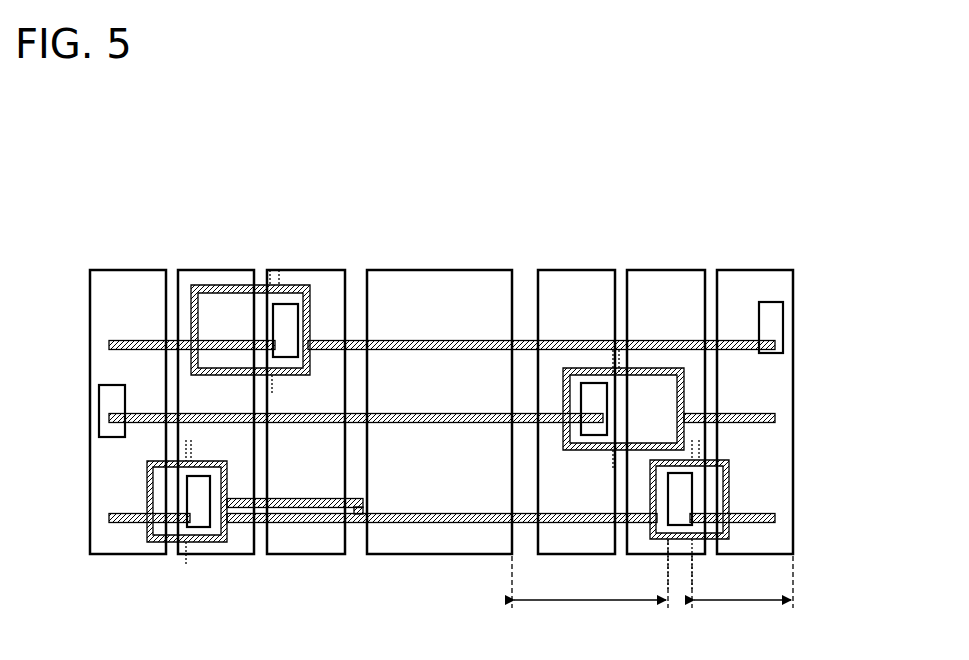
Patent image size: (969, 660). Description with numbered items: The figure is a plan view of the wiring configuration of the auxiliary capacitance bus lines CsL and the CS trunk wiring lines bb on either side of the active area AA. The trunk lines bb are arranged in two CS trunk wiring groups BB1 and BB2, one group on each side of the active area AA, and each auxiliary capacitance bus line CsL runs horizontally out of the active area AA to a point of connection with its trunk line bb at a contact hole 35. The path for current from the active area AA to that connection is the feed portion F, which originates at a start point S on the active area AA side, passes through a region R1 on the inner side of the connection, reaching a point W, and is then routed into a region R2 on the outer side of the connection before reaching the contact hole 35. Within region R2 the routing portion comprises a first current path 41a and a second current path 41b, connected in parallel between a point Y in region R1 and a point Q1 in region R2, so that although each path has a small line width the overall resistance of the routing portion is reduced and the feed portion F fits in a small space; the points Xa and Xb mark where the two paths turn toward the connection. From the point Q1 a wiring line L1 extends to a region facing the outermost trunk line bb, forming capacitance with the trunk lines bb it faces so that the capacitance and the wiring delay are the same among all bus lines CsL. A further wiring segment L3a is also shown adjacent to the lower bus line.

The contact hole 35 is at (296, 310).
The first current path 41a is at (276, 270).
The second current path 41b is at (237, 377).
The point on routing portion Q1 is at (198, 335).
The wiring line L1 is at (108, 345).
The CS trunk wiring line bb is at (120, 270).
The active area AA is at (424, 270).
The CS trunk wiring group BB1 is at (677, 212).
The CS trunk wiring group BB2 is at (225, 212).
The point in region R1 Y is at (311, 341).
The feed portion F is at (356, 339).
The auxiliary capacitance bus line CsL is at (430, 341).
The point on routing portion Xa is at (268, 275).
The point on routing portion Xb is at (686, 568).
The wiring line L3a is at (558, 514).
The start point S is at (511, 526).
The region R1 is at (590, 585).
The region R2 is at (742, 593).
The point W is at (667, 545).